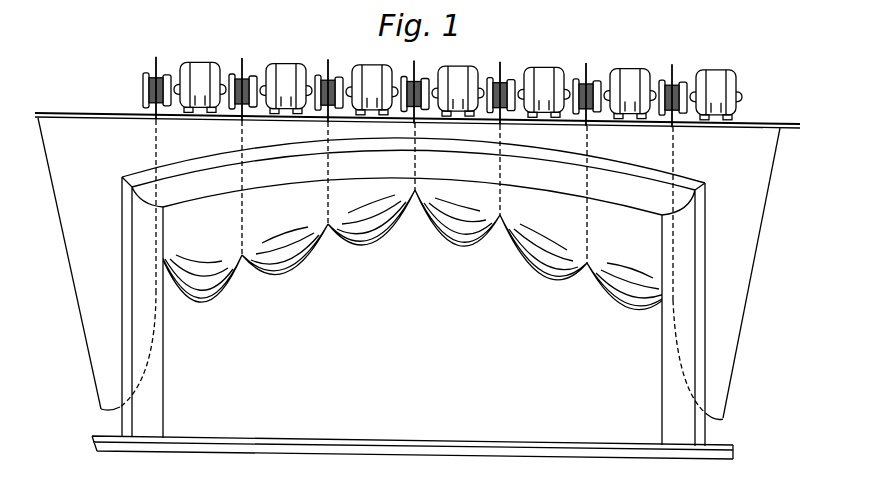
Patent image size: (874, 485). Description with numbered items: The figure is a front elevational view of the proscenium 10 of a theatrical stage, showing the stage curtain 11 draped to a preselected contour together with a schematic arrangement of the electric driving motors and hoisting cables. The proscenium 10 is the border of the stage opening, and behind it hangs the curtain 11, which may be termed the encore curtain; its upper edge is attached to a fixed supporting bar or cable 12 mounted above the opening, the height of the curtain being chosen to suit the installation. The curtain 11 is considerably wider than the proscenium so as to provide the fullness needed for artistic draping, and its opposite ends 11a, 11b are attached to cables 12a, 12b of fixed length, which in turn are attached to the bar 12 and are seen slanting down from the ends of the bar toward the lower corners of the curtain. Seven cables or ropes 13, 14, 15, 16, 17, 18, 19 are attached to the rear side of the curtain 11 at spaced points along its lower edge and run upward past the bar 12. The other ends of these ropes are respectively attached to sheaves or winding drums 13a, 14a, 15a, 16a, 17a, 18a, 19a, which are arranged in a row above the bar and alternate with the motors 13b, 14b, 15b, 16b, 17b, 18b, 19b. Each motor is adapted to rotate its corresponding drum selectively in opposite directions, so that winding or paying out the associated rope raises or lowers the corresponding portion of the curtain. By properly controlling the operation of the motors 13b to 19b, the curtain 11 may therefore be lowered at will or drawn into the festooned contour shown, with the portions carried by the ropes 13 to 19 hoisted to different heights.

The proscenium 10 is at (158, 393).
The curtain 11 is at (603, 292).
The end of curtain 11a is at (724, 419).
The end of curtain 11b is at (101, 409).
The supporting bar 12 is at (773, 127).
The cable 12a is at (741, 353).
The cable 12b is at (85, 336).
The cable 13 is at (674, 151).
The cable 14 is at (588, 143).
The cable 15 is at (501, 136).
The cable 16 is at (416, 134).
The cable 17 is at (327, 134).
The cable 18 is at (241, 135).
The cable 19 is at (154, 138).
The winding drum 13a is at (672, 80).
The winding drum 14a is at (586, 79).
The winding drum 15a is at (500, 78).
The winding drum 16a is at (414, 76).
The winding drum 17a is at (328, 75).
The winding drum 18a is at (242, 74).
The winding drum 19a is at (156, 72).
The motor 13b is at (716, 78).
The motor 14b is at (630, 77).
The motor 15b is at (544, 75).
The motor 16b is at (458, 74).
The motor 17b is at (372, 73).
The motor 18b is at (286, 72).
The motor 19b is at (200, 70).